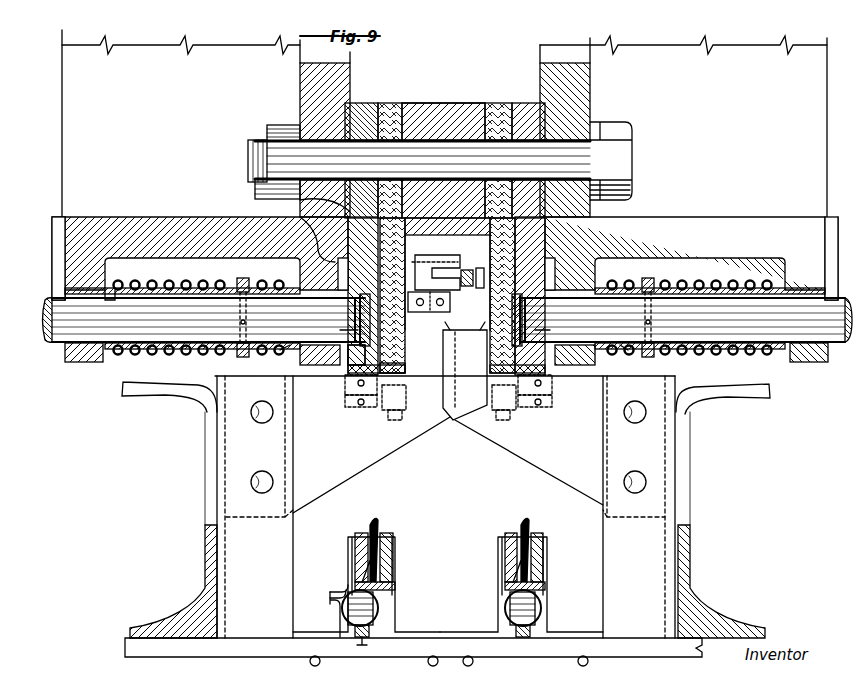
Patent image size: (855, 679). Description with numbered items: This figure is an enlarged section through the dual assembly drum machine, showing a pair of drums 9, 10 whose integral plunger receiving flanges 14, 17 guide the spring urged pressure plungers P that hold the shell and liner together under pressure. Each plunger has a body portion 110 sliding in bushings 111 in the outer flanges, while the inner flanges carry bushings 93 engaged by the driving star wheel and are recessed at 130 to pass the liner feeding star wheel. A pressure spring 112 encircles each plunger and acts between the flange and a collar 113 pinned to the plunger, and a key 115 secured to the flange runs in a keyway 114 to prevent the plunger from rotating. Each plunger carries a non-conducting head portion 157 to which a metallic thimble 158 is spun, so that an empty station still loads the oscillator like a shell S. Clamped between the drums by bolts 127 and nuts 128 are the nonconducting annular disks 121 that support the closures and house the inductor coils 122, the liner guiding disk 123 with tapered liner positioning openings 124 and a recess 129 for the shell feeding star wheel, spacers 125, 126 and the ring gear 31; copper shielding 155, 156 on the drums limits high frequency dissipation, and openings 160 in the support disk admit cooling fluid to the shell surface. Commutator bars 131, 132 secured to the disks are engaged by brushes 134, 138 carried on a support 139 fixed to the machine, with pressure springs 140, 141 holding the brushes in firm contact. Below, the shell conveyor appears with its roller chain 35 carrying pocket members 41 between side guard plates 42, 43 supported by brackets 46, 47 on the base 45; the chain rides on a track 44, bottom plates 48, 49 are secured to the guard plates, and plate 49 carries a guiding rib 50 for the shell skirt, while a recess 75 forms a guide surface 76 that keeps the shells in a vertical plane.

The drum 9 is at (305, 92).
The drum 10 is at (585, 90).
The plunger receiving flange 14 is at (805, 362).
The plunger receiving flange 17 is at (85, 363).
The ring gear 31 is at (475, 103).
The roller chain 35 is at (442, 633).
The pocket members 41 is at (393, 604).
The side guard plate 42 is at (392, 532).
The side guard plate 43 is at (360, 532).
The track 44 is at (362, 646).
The base 45 is at (482, 655).
The bracket 46 is at (348, 558).
The bracket 47 is at (396, 558).
The bottom plate 48 is at (396, 587).
The bottom plate 49 is at (330, 600).
The guiding rib 50 is at (340, 585).
The recess 75 is at (580, 363).
The guide surface 76 is at (320, 364).
The bushing 93 is at (448, 355).
The plunger body portion 110 is at (282, 282).
The bushing 111 is at (112, 352).
The pressure spring 112 is at (182, 281).
The collar 113 is at (250, 275).
The keyway 114 is at (112, 290).
The key 115 is at (64, 217).
The annular disk 121 is at (416, 103).
The inductor coil 122 is at (405, 346).
The liner guiding disk 123 is at (357, 103).
The tapered liner positioning opening 124 is at (359, 365).
The spacer 125 is at (435, 103).
The spacer 126 is at (388, 103).
The bolt 127 is at (626, 160).
The nut 128 is at (270, 127).
The recess 129 is at (372, 268).
The recess 130 is at (340, 283).
The commutator bar 131 is at (405, 370).
The commutator bar 132 is at (440, 262).
The brush 134 is at (385, 405).
The brush 138 is at (466, 270).
The brush support 139 is at (446, 516).
The pressure spring 140 is at (466, 328).
The pressure spring 141 is at (392, 420).
The copper shielding 155 is at (330, 245).
The copper shielding 156 is at (300, 200).
The non-conducting head portion 157 is at (352, 312).
The metallic thimble 158 is at (340, 330).
The opening 160 is at (414, 314).
The pressure plunger P is at (55, 345).
The shell S is at (378, 528).